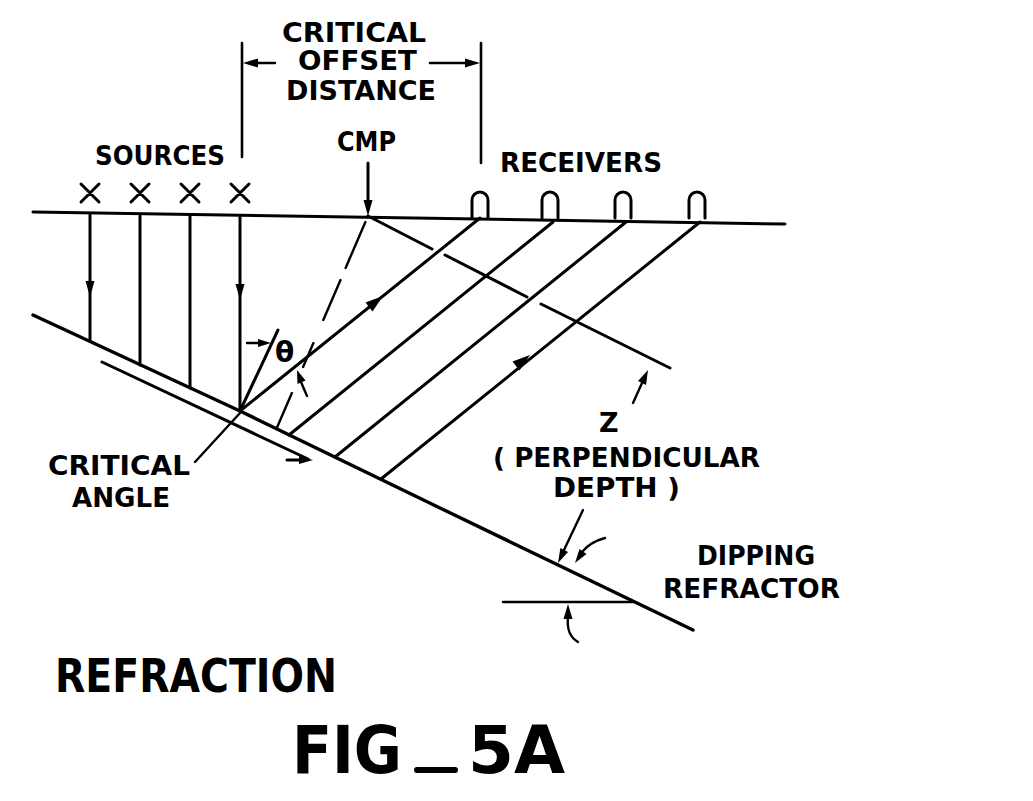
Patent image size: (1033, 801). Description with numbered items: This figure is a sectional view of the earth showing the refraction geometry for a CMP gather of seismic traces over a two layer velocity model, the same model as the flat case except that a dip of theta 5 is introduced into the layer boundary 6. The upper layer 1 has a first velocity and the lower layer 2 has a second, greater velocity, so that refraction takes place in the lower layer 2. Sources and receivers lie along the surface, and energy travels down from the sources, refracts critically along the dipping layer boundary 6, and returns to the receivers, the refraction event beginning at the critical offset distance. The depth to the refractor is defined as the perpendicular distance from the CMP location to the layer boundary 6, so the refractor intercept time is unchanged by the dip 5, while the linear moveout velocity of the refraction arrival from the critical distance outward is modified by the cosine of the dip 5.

The upper layer velocity V1 1 is at (449, 284).
The lower layer velocity V2 2 is at (200, 485).
The dip 5 is at (534, 583).
The layer boundary 6 is at (463, 523).